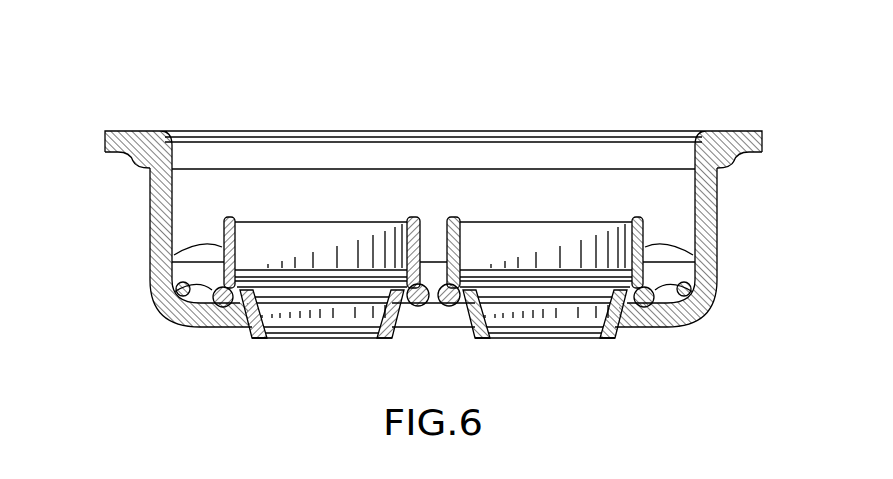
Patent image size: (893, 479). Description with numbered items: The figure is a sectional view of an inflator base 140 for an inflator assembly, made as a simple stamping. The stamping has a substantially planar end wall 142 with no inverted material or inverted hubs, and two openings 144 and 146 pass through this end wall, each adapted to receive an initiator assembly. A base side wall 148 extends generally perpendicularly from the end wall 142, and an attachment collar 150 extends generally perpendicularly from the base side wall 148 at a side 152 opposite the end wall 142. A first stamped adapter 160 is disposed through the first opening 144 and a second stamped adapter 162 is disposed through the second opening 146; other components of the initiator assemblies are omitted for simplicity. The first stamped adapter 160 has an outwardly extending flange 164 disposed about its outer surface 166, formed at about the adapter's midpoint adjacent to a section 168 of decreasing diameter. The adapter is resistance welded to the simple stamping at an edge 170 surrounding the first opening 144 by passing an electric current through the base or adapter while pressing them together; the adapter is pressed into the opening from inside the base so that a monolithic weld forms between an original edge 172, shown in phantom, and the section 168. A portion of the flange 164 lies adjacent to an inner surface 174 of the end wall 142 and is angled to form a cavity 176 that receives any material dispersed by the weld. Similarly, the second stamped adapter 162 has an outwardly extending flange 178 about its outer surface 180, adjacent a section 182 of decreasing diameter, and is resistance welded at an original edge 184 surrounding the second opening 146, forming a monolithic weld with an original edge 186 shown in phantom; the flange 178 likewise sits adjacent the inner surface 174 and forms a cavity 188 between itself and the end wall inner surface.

The inflator base 140 is at (198, 84).
The end wall 142 is at (640, 326).
The first opening 144 is at (246, 330).
The second opening 146 is at (623, 323).
The base side wall 148 is at (716, 227).
The attachment collar 150 is at (105, 136).
The side 152 is at (148, 171).
The first stamped adapter 160 is at (230, 216).
The second stamped adapter 162 is at (633, 216).
The outwardly extending flange 164 is at (172, 262).
The outer surface 166 is at (222, 233).
The section of decreasing diameter 168 is at (374, 318).
The edge 170 is at (214, 322).
The original edge 172 is at (260, 340).
The inner surface 174 is at (180, 286).
The cavity 176 is at (418, 292).
The outwardly extending flange 178 is at (700, 292).
The outer surface 180 is at (695, 262).
The section of decreasing diameter 182 is at (595, 325).
The original edge 184 is at (620, 328).
The original edge 186 is at (481, 338).
The cavity 188 is at (467, 292).